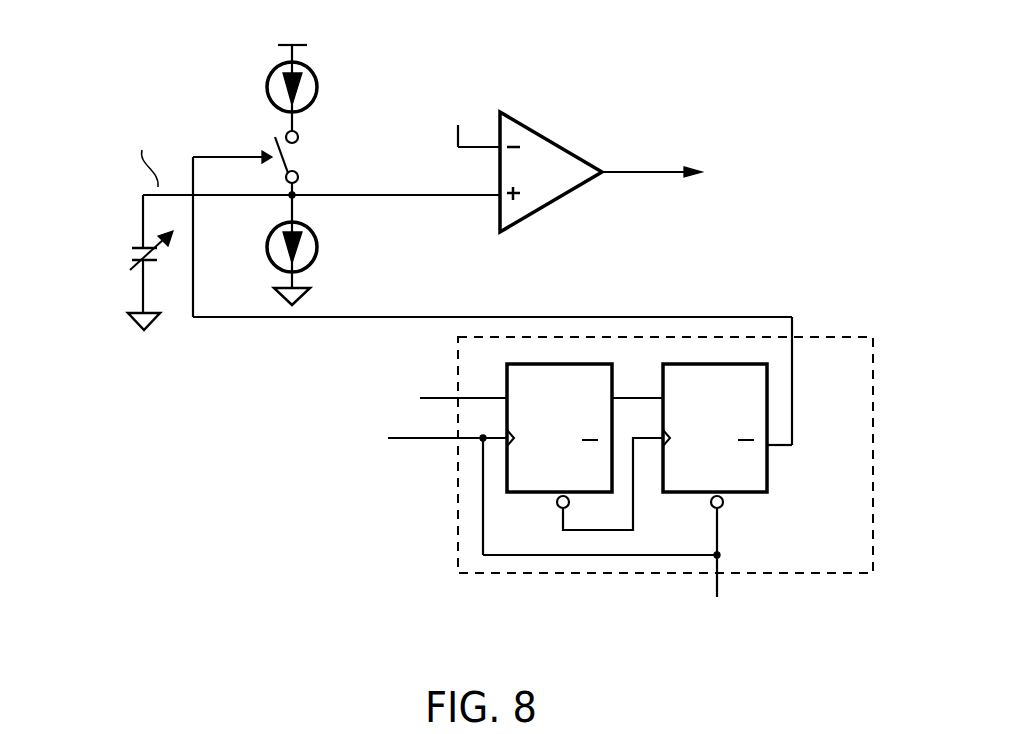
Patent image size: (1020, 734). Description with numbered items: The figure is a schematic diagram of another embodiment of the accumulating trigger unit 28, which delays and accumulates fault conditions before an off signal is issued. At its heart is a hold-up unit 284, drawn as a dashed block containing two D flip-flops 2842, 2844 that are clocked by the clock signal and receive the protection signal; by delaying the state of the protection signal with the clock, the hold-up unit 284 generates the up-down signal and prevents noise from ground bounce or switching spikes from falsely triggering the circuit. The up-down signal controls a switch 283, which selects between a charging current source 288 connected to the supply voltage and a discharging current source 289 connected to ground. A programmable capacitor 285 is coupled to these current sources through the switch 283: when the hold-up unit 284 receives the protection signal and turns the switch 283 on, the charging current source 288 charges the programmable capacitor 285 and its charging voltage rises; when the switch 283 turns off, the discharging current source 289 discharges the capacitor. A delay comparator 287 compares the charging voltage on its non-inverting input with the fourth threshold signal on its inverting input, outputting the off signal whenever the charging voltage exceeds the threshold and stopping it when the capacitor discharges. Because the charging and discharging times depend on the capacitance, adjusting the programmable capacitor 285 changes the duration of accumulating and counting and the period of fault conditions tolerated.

The accumulating trigger unit 28 is at (828, 58).
The switch 283 is at (305, 162).
The hold-up unit 284 is at (808, 575).
The D flip-flop 2842 is at (538, 360).
The D flip-flop 2844 is at (772, 468).
The programmable capacitor 285 is at (128, 255).
The delay comparator 287 is at (557, 137).
The charging current source 288 is at (320, 87).
The discharging current source 289 is at (322, 248).